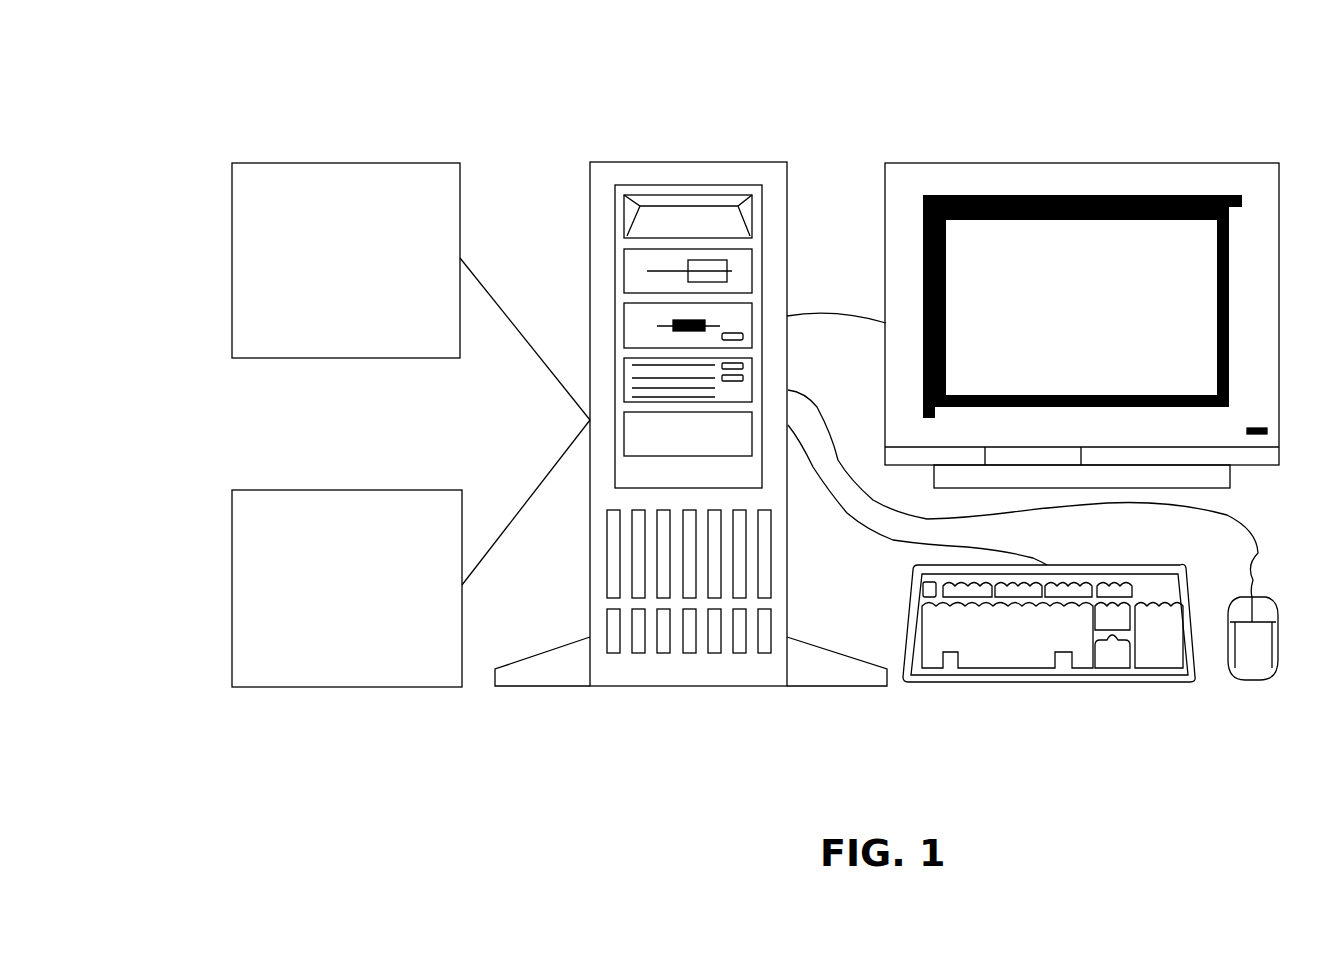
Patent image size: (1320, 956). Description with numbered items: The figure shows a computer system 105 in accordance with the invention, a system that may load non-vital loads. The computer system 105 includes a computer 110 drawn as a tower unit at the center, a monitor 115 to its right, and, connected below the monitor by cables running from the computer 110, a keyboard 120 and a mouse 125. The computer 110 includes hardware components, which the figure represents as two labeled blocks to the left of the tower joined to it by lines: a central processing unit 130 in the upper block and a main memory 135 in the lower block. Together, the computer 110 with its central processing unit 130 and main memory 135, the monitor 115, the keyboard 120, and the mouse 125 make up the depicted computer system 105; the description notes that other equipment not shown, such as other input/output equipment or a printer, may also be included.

The computer system 105 is at (478, 80).
The computer 110 is at (643, 162).
The monitor 115 is at (935, 163).
The keyboard 120 is at (955, 683).
The mouse 125 is at (1248, 680).
The central processing unit 130 is at (283, 163).
The main memory 135 is at (283, 490).